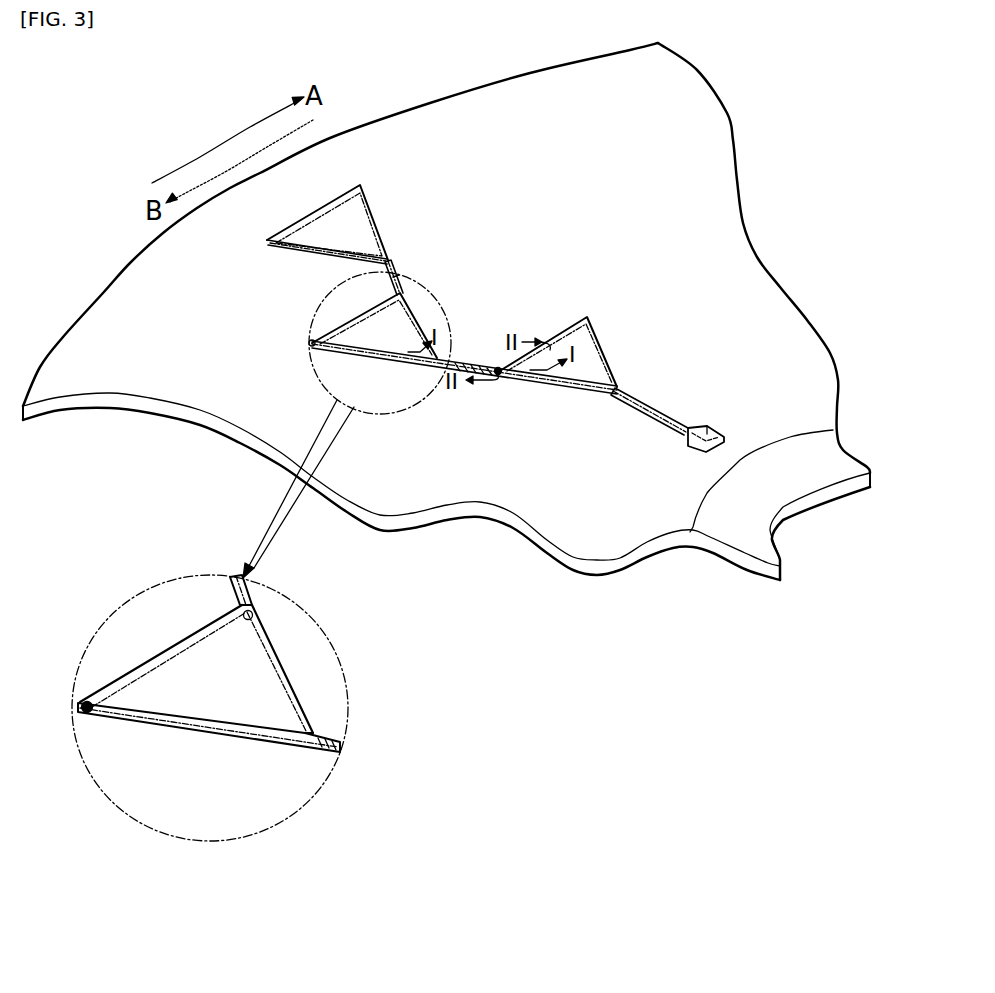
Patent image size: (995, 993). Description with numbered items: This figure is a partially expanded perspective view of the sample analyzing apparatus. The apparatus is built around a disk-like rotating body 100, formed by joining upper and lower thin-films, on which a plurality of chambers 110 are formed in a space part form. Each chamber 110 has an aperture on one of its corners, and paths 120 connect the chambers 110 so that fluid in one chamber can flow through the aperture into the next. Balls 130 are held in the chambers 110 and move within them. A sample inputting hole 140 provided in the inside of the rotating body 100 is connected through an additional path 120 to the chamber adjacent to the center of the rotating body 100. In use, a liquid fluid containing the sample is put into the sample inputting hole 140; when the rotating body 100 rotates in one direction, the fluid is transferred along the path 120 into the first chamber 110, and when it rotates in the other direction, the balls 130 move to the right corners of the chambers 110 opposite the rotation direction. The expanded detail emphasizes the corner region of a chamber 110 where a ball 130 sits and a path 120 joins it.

The rotating body 100 is at (122, 297).
The chamber 110 is at (588, 347).
The path 120 is at (466, 364).
The ball 130 is at (312, 344).
The sample inputting hole 140 is at (713, 430).